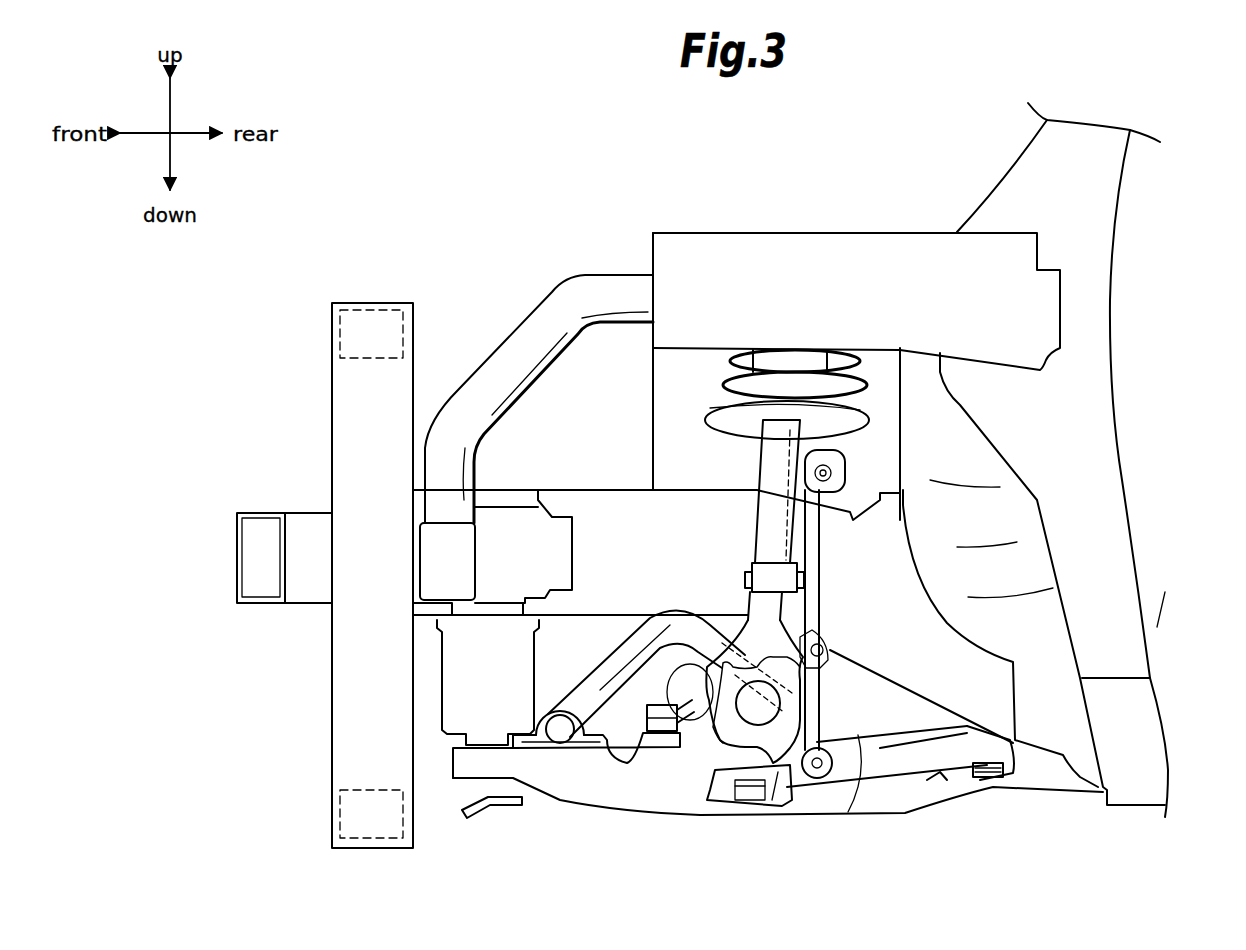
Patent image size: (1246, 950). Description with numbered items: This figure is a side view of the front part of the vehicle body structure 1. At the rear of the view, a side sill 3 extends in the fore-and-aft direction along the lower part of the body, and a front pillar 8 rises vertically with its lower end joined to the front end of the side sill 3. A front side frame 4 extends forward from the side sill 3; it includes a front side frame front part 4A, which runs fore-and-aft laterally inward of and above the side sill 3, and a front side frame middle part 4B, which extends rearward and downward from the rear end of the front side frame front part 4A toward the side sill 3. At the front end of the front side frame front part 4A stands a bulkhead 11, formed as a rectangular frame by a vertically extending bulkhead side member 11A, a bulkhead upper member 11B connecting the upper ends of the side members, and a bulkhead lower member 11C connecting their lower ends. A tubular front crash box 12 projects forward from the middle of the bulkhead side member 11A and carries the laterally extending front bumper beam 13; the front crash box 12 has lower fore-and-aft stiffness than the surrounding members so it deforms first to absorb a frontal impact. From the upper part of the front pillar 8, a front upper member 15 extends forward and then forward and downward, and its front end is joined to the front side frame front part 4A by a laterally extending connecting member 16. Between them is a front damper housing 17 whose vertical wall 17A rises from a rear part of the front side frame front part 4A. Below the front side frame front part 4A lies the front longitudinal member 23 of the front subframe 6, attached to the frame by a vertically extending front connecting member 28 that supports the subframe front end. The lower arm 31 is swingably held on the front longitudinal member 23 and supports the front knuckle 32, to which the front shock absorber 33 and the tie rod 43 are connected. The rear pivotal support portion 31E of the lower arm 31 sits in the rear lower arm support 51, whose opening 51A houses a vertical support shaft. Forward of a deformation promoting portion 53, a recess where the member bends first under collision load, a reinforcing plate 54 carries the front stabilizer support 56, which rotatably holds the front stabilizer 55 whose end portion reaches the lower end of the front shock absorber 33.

The vehicle body structure 1 is at (897, 132).
The side sill 3 is at (1131, 795).
The front side frame 4 is at (602, 483).
The front side frame front part 4A is at (568, 497).
The front side frame middle part 4B is at (905, 668).
The front subframe 6 is at (603, 815).
The front pillar 8 is at (1108, 483).
The bulkhead 11 is at (392, 298).
The bulkhead side member 11A is at (345, 392).
The bulkhead upper member 11B is at (357, 306).
The bulkhead lower member 11C is at (365, 842).
The front crash box 12 is at (302, 608).
The front bumper beam 13 is at (258, 512).
The front upper member 15 is at (675, 247).
The connecting member 16 is at (505, 520).
The front damper housing 17 is at (648, 372).
The vertical wall 17A is at (685, 360).
The front longitudinal member 23 is at (627, 772).
The front connecting member 28 is at (450, 680).
The lower arm 31 is at (837, 784).
The rear pivotal support portion 31E is at (1010, 775).
The front knuckle 32 is at (695, 745).
The front shock absorber 33 is at (808, 357).
The tie rod 43 is at (680, 782).
The rear lower arm support 51 is at (980, 779).
The opening 51A is at (943, 775).
The deformation promoting portion 53 is at (645, 764).
The reinforcing plate 54 is at (578, 756).
The front stabilizer 55 is at (636, 652).
The front stabilizer support 56 is at (548, 714).